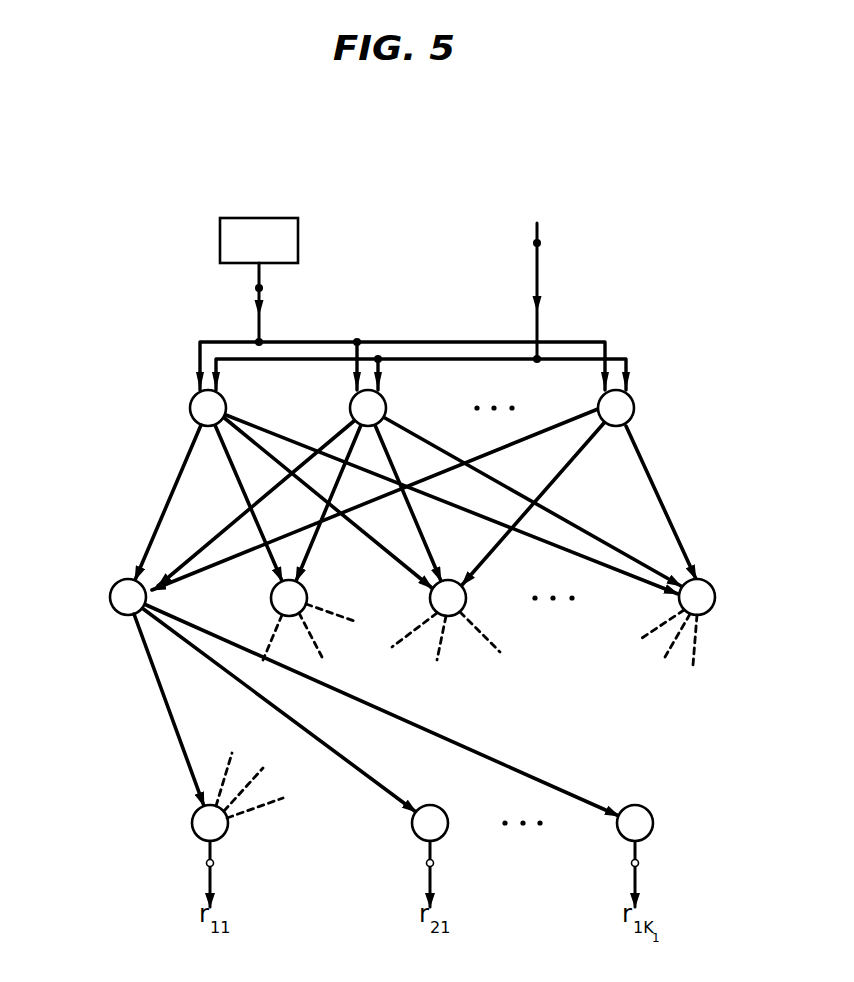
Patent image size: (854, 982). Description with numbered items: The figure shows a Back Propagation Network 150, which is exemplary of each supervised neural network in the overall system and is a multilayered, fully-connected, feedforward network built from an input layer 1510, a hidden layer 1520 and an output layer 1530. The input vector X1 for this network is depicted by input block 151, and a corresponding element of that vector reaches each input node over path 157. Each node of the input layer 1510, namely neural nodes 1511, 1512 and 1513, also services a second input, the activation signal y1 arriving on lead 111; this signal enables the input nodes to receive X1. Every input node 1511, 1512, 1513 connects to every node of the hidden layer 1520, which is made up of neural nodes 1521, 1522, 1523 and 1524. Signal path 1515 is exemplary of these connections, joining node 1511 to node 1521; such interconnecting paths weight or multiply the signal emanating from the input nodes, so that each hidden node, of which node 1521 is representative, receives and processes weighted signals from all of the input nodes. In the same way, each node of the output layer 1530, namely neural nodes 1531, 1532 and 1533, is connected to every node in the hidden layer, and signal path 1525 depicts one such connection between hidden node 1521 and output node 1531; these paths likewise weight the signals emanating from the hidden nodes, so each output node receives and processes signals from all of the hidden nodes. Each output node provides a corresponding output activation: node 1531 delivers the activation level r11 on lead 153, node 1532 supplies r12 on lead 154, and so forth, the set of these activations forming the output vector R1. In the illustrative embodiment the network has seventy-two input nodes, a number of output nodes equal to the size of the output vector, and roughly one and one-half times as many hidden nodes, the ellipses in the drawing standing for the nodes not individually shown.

The input block 151 is at (259, 218).
The path 157 is at (262, 288).
The Back Propagation Network 150 is at (446, 230).
The lead 111 is at (540, 243).
The input layer 1510 is at (126, 378).
The neural node 1511 is at (226, 402).
The neural node 1512 is at (386, 402).
The neural node 1513 is at (634, 402).
The signal path 1515 is at (166, 490).
The hidden layer 1520 is at (86, 610).
The neural node 1521 is at (146, 592).
The neural node 1522 is at (307, 592).
The neural node 1523 is at (466, 592).
The neural node 1524 is at (715, 588).
The signal path 1525 is at (163, 706).
The output layer 1530 is at (167, 833).
The neural node 1531 is at (228, 826).
The neural node 1532 is at (448, 820).
The neural node 1533 is at (652, 815).
The lead 153 is at (214, 863).
The lead 154 is at (434, 863).